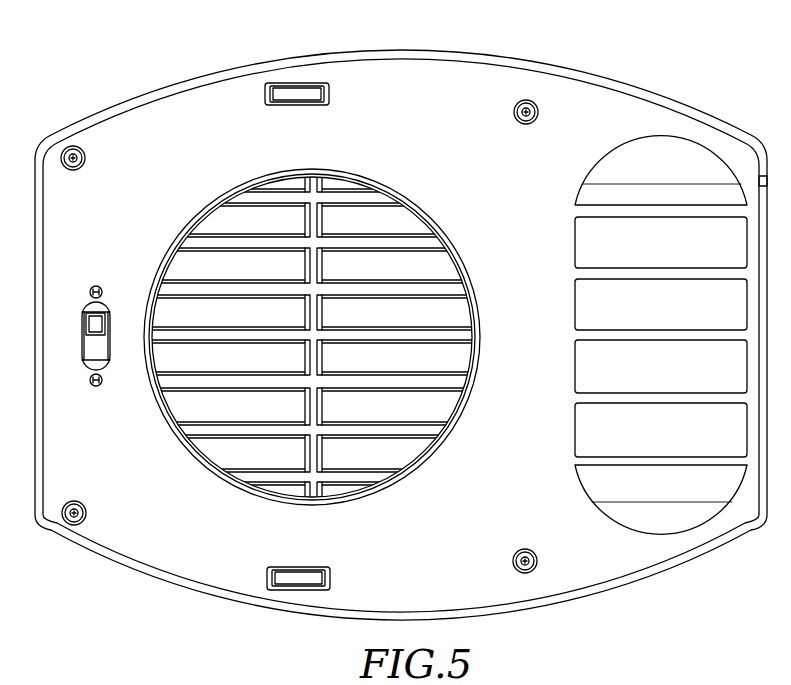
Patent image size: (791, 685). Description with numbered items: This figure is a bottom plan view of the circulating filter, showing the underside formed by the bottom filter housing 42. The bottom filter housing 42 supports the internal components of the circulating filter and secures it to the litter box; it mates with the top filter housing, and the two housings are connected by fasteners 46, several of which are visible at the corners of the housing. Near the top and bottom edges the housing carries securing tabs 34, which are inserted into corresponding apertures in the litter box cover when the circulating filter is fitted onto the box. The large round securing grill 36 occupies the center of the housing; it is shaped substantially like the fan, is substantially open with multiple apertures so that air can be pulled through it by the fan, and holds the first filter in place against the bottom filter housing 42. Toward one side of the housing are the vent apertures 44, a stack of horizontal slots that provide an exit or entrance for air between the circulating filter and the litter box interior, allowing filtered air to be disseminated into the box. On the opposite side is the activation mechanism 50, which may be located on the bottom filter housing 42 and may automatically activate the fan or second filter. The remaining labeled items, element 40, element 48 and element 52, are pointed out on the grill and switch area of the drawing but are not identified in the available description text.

The securing tabs 34 is at (302, 96).
The securing grill 36 is at (240, 186).
The grille slats 40 is at (182, 265).
The bottom filter housing 42 is at (575, 98).
The vent apertures 44 is at (633, 140).
The fasteners 46 is at (515, 118).
The grille rim 48 is at (404, 216).
The activation mechanism 50 is at (86, 320).
The fastener 52 is at (90, 383).